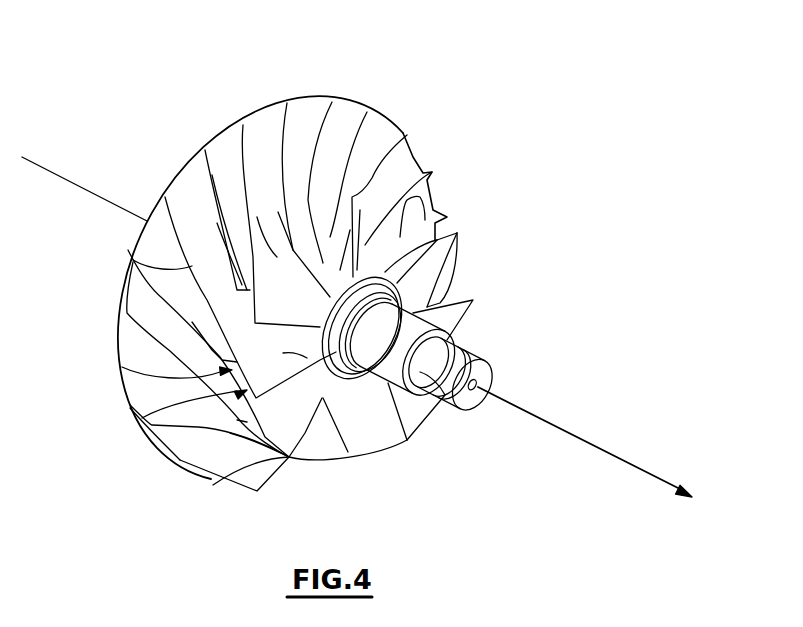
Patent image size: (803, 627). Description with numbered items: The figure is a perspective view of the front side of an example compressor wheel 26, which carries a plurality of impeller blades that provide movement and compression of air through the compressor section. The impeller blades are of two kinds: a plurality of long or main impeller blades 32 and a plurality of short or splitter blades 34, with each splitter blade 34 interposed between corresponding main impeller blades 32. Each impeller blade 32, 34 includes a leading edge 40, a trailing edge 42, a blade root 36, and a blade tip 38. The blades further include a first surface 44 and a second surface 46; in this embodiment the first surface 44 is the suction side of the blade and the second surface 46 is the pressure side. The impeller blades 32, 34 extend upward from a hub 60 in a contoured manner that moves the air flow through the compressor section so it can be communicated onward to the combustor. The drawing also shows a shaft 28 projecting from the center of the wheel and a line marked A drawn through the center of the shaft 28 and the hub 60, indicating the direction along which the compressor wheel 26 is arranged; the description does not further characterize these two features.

The compressor wheel 26 is at (333, 248).
The shaft 28 is at (486, 288).
The main impeller blades 32 is at (180, 460).
The splitter blades 34 is at (180, 323).
The blade root 36 is at (201, 210).
The blade tip 38 is at (133, 260).
The leading edge 40 is at (283, 395).
The trailing edge 42 is at (168, 168).
The first surface 44 is at (347, 453).
The second surface 46 is at (130, 424).
The hub 60 is at (357, 105).
The axis of rotation A is at (541, 420).